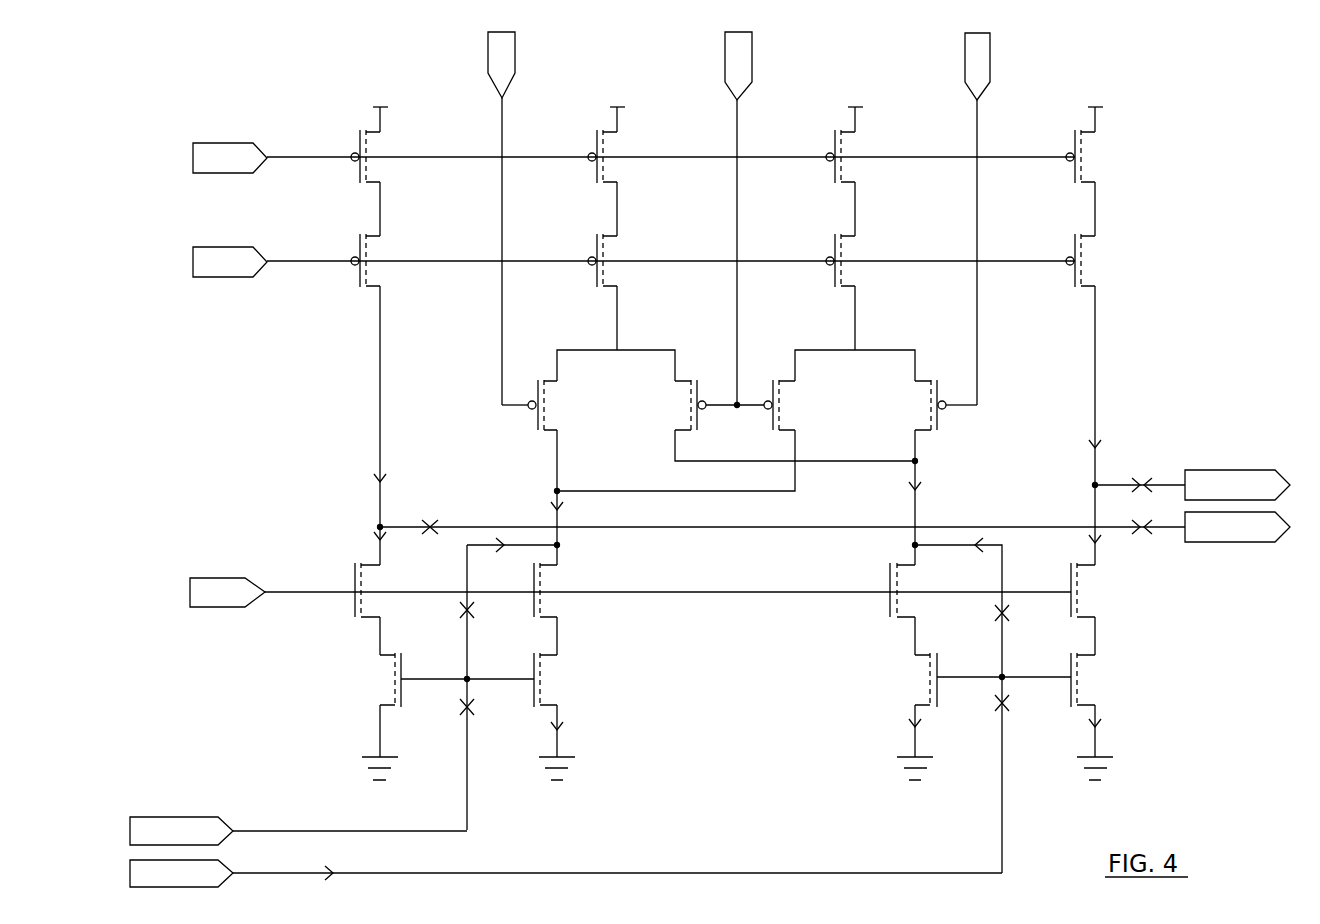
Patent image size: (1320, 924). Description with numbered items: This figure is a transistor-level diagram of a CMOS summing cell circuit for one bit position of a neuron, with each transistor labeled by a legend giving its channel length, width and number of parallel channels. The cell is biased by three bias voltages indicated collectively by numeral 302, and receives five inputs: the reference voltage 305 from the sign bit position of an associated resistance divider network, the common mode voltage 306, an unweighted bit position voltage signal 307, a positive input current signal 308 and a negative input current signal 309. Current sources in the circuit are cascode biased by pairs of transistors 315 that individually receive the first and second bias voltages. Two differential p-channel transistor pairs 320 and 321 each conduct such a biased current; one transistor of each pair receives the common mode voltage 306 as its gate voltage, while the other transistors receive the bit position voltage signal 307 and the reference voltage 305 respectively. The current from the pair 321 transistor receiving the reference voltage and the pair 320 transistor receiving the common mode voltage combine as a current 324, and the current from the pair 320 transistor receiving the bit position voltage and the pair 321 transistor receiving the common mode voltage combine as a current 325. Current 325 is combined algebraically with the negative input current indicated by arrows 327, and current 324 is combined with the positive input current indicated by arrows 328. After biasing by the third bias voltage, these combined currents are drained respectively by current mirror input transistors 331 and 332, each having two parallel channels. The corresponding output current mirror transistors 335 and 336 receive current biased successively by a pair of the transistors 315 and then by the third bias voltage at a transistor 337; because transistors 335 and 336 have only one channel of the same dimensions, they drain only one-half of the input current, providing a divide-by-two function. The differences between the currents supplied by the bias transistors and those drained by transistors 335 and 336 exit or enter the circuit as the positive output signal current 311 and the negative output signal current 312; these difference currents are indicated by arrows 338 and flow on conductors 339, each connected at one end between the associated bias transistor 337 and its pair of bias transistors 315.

The bias voltages BV1, BV2, BV3 302 is at (205, 175).
The reference voltage VR 305 is at (515, 82).
The common mode voltage VCM 306 is at (752, 85).
The unweighted bit position voltage signal VIN 307 is at (990, 85).
The input current signal POSIIN 308 is at (195, 888).
The input current signal NEGIIN 309 is at (205, 815).
The output signal current POSIOUT 311 is at (1245, 470).
The output signal current NEGIOUT 312 is at (1245, 542).
The cascode bias transistors 315 is at (366, 232).
The differential p-channel transistor pair 320 is at (789, 353).
The differential p-channel transistor pair 321 is at (693, 360).
The combined current 324 is at (565, 512).
The combined current 325 is at (920, 493).
The NEGIIN current arrows 327 is at (1000, 612).
The POSIIN current arrows 328 is at (503, 544).
The current mirror input transistor 331 is at (940, 700).
The current mirror input transistor 332 is at (548, 708).
The current mirror output transistor 335 is at (1100, 670).
The current mirror output transistor 336 is at (395, 666).
The bias transistor 337 is at (353, 570).
The difference current arrows 338 is at (430, 525).
The conductors 339 is at (1094, 487).